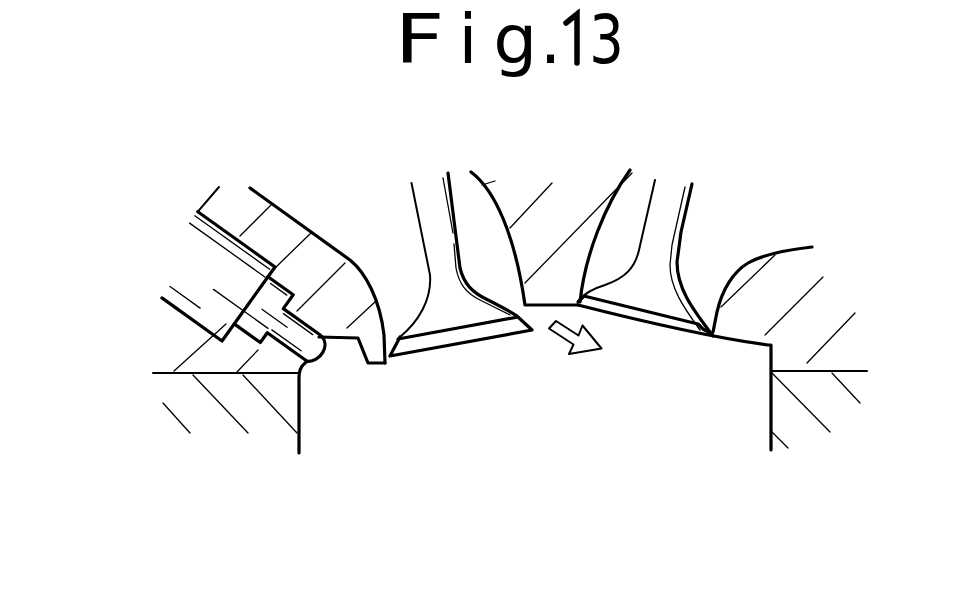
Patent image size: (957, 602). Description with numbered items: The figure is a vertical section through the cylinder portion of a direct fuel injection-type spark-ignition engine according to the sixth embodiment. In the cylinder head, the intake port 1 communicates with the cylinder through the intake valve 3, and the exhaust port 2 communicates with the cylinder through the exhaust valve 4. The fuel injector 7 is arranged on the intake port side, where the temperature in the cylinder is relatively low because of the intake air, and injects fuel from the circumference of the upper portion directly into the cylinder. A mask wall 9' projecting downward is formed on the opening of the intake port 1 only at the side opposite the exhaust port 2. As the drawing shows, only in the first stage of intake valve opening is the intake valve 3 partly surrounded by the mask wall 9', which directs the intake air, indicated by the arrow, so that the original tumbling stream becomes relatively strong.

The intake port 1 is at (343, 222).
The exhaust port 2 is at (705, 243).
The intake valve 3 is at (433, 217).
The exhaust valve 4 is at (652, 243).
The fuel injector 7 is at (200, 283).
The mask wall 9' is at (359, 399).